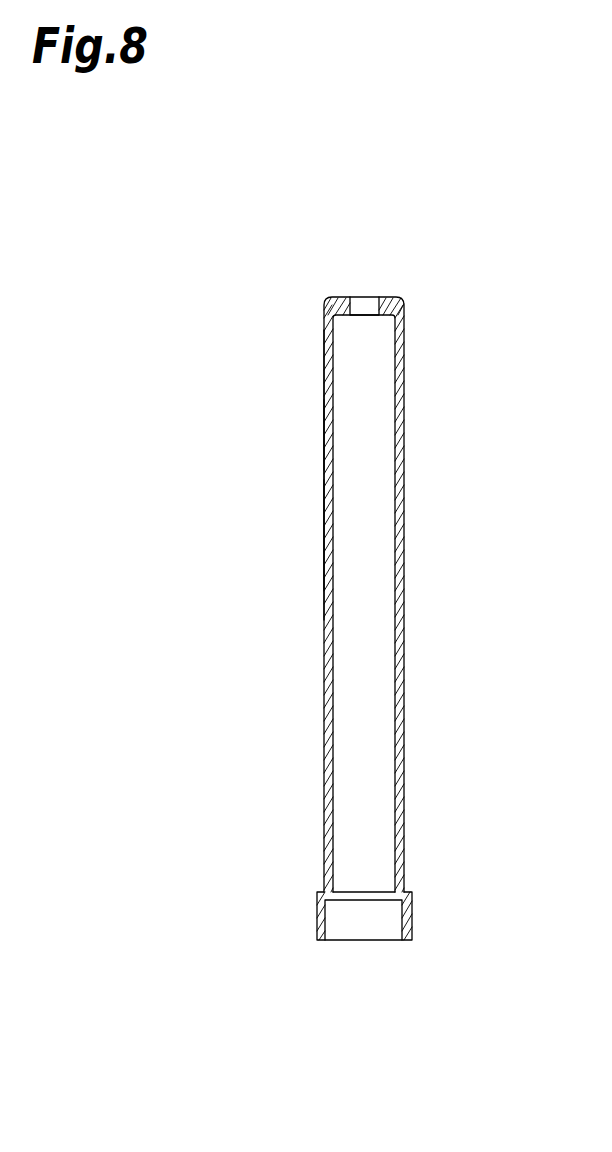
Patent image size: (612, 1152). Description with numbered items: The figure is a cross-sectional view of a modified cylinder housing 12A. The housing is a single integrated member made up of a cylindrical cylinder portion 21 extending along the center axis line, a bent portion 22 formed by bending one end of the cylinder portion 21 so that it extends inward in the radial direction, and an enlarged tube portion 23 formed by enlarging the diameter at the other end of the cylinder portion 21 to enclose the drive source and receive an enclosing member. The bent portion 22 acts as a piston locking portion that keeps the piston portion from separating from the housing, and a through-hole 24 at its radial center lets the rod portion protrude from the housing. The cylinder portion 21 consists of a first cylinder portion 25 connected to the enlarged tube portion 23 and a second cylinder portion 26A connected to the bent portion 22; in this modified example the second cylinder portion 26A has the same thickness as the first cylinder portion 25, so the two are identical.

The cylinder housing 12A is at (406, 623).
The cylinder portion 21 is at (215, 403).
The bent portion 22 is at (345, 297).
The enlarged tube portion 23 is at (317, 920).
The through-hole 24 is at (367, 297).
The first cylinder portion 25 is at (324, 588).
The second cylinder portion 26A is at (324, 400).